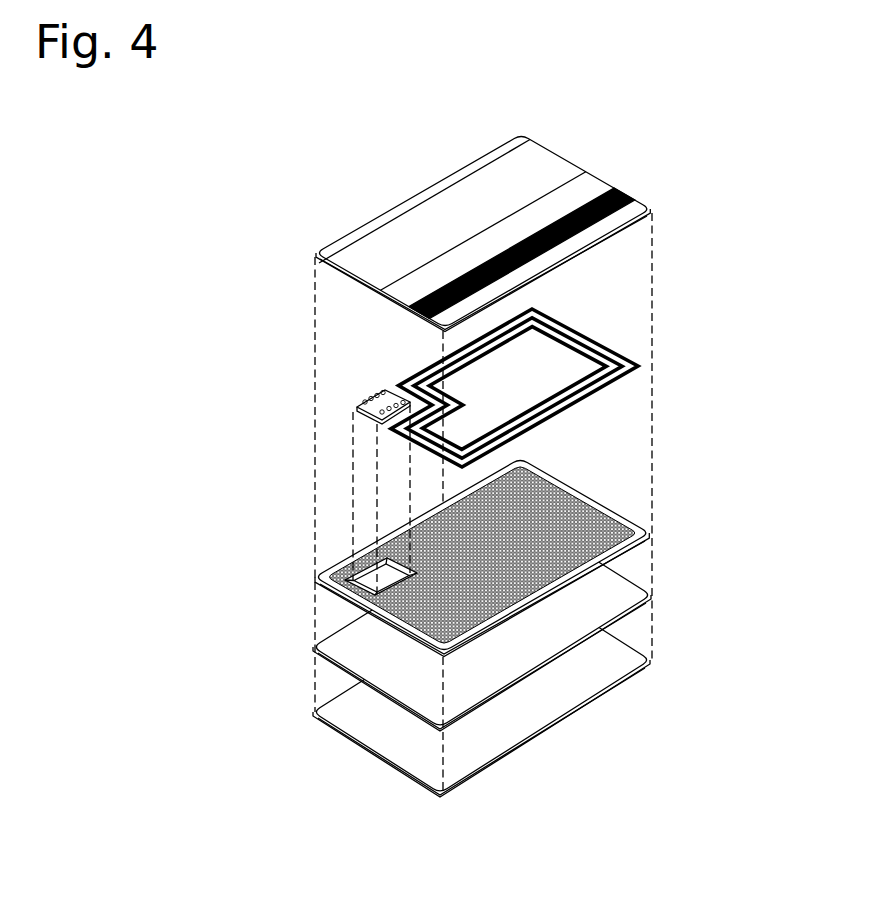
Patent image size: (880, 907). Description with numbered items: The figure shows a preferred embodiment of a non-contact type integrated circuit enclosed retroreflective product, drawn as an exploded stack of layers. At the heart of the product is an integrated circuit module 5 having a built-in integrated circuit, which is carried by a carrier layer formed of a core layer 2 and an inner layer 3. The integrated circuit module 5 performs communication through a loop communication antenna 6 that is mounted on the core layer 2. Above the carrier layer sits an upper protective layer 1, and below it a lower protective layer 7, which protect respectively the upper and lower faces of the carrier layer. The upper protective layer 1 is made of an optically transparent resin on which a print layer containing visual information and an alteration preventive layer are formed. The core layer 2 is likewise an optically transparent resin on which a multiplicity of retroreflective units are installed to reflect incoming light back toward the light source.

The upper protective layer 1 is at (545, 207).
The core layer 2 is at (545, 511).
The inner layer 3 is at (544, 624).
The integrated circuit module 5 is at (296, 359).
The loop communication antenna 6 is at (583, 341).
The lower protective layer 7 is at (544, 689).